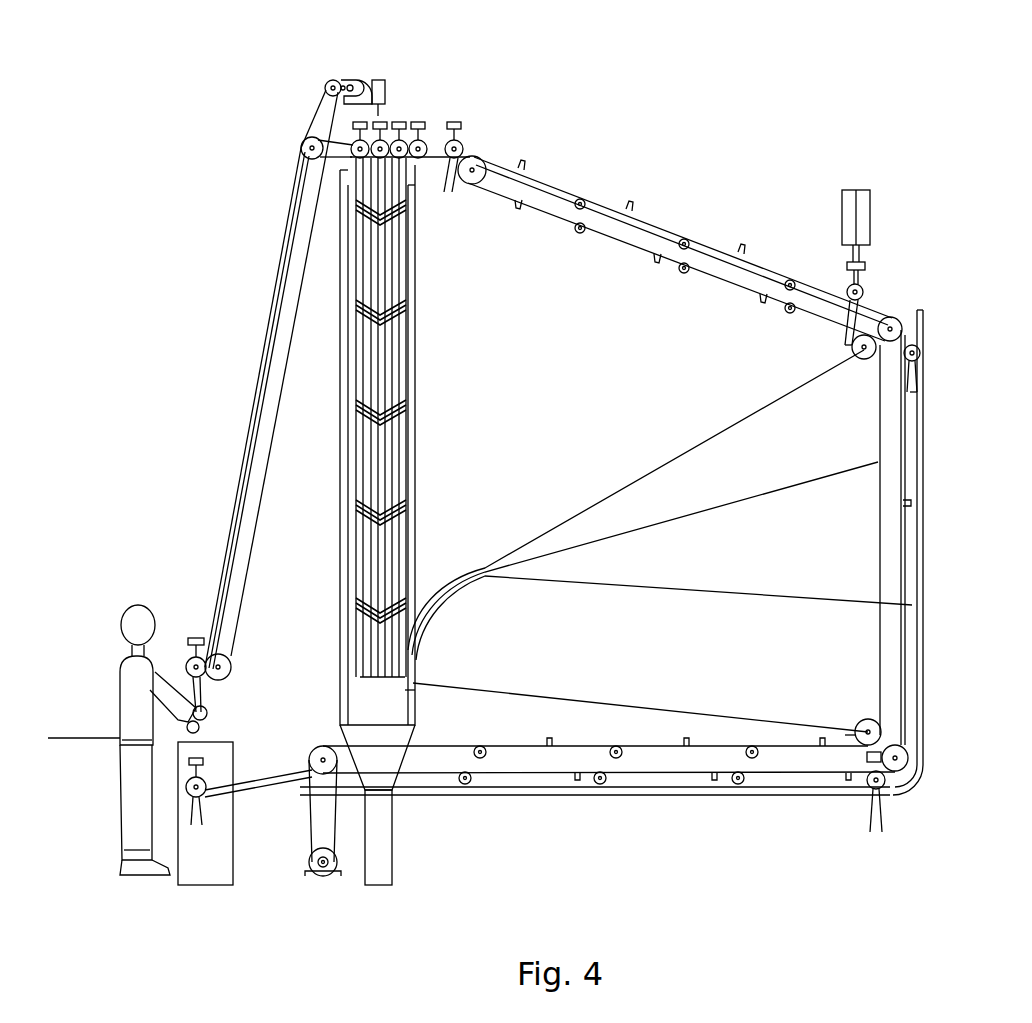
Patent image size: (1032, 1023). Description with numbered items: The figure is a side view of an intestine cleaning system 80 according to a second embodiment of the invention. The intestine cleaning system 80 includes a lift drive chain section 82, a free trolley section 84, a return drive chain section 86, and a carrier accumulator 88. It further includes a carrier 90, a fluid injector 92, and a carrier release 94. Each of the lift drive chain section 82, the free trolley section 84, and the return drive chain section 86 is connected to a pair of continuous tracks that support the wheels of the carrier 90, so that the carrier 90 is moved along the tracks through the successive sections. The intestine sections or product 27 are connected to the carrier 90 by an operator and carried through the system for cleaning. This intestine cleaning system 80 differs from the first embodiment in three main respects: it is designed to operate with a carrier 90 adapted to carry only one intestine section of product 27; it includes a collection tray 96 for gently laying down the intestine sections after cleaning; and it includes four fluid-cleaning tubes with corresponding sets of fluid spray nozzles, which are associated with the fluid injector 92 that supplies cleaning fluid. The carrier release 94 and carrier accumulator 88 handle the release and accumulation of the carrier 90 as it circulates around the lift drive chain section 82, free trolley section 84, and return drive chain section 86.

The intestine cleaning system 80 is at (672, 34).
The product 27 is at (356, 342).
The lift drive chain section 82 is at (262, 354).
The free trolley section 84 is at (433, 112).
The return drive chain section 86 is at (708, 248).
The carrier accumulator 88 is at (255, 797).
The carrier 90 is at (190, 638).
The fluid injector 92 is at (378, 66).
The carrier release 94 is at (862, 188).
The collection tray 96 is at (735, 580).